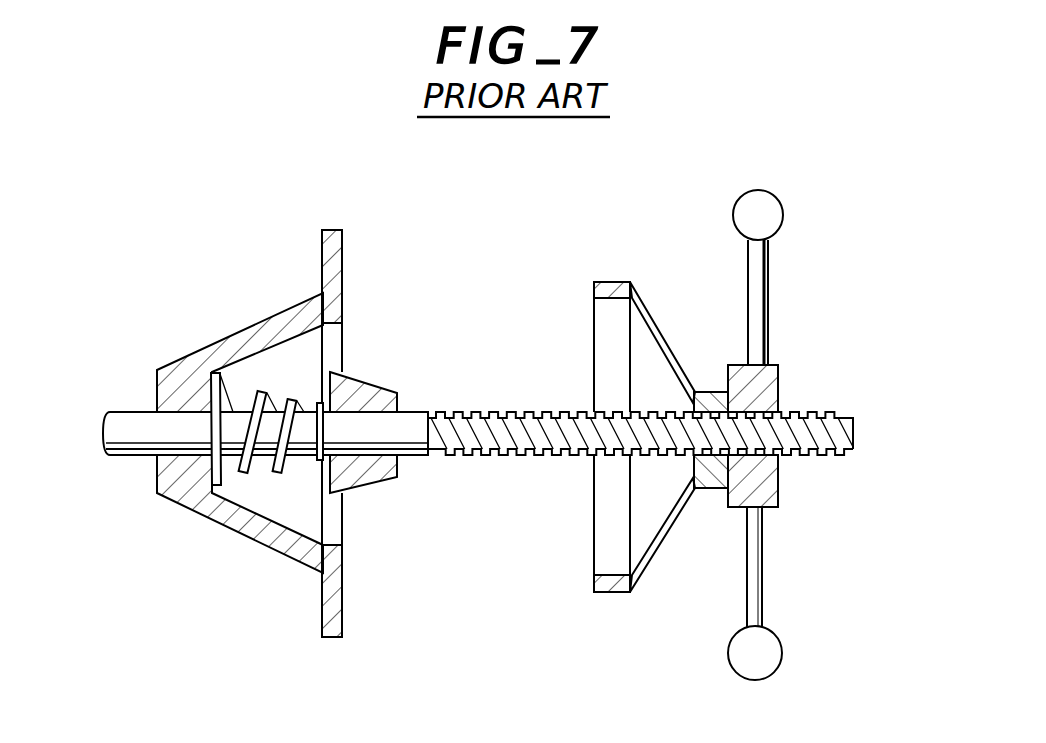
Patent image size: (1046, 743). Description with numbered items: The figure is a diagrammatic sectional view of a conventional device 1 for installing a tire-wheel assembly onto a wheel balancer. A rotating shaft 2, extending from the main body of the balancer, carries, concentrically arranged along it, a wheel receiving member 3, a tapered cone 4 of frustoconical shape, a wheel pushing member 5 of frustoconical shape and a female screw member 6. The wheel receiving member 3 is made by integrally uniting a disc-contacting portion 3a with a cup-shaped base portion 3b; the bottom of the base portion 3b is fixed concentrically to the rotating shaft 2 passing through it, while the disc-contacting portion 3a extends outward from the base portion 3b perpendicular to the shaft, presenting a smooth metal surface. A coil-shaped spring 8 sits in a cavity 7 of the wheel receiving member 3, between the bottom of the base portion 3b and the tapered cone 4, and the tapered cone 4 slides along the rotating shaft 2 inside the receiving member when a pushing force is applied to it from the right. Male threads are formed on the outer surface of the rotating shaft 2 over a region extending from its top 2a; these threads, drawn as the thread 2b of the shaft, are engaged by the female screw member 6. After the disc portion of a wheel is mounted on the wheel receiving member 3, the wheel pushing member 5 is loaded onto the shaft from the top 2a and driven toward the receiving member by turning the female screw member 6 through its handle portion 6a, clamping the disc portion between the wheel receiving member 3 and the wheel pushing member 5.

The conventional device 1 is at (813, 330).
The rotating shaft 2 is at (127, 421).
The top of the rotating shaft 2a is at (855, 431).
The thread of screw rod 2b is at (817, 458).
The wheel receiving member 3 is at (331, 229).
The disc-contacting portion 3a is at (343, 268).
The cup-shaped base portion 3b is at (252, 328).
The tapered cone 4 is at (385, 387).
The wheel pushing member 5 is at (612, 281).
The female screw member 6 is at (770, 388).
The handle portion 6a is at (780, 203).
The cavity 7 is at (287, 367).
The coil-shaped spring 8 is at (236, 486).